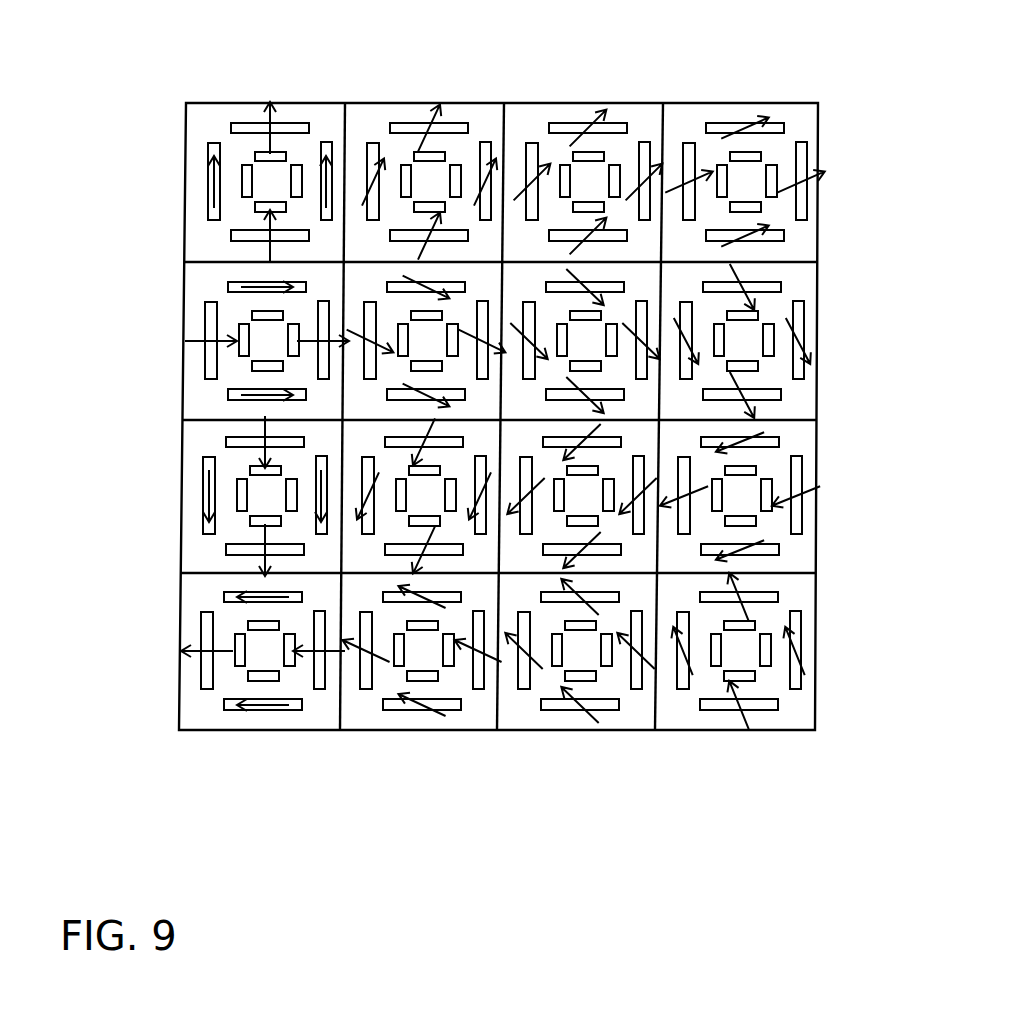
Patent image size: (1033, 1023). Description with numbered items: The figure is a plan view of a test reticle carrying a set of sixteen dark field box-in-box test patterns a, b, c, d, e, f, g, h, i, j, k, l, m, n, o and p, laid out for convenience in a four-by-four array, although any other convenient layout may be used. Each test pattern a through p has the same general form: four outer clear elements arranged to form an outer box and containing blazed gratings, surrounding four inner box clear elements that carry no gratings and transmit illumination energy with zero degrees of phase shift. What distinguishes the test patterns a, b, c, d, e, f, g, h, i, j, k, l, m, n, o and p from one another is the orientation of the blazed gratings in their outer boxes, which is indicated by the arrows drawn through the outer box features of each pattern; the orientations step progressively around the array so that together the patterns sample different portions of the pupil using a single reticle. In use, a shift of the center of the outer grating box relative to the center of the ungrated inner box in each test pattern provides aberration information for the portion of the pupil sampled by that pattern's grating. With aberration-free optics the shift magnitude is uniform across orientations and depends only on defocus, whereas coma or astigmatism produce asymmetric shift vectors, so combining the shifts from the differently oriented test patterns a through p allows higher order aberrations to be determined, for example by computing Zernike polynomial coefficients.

The test pattern a is at (278, 123).
The test pattern b is at (418, 124).
The test pattern c is at (587, 118).
The test pattern d is at (736, 120).
The test pattern e is at (192, 334).
The test pattern f is at (392, 387).
The test pattern g is at (558, 268).
The test pattern h is at (812, 315).
The test pattern i is at (208, 495).
The test pattern j is at (388, 535).
The test pattern k is at (566, 458).
The test pattern l is at (778, 498).
The test pattern m is at (186, 655).
The test pattern n is at (390, 690).
The test pattern o is at (562, 683).
The test pattern p is at (732, 710).